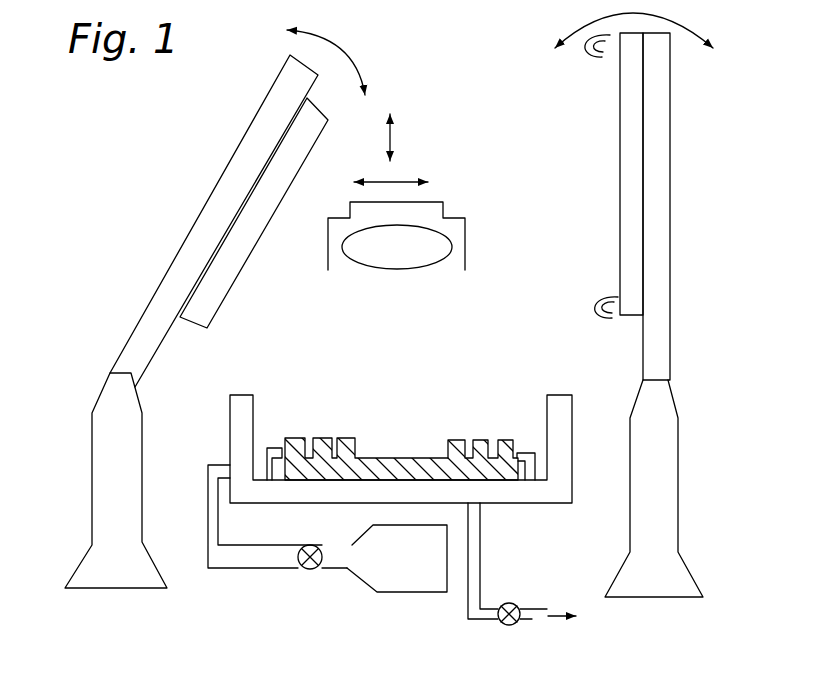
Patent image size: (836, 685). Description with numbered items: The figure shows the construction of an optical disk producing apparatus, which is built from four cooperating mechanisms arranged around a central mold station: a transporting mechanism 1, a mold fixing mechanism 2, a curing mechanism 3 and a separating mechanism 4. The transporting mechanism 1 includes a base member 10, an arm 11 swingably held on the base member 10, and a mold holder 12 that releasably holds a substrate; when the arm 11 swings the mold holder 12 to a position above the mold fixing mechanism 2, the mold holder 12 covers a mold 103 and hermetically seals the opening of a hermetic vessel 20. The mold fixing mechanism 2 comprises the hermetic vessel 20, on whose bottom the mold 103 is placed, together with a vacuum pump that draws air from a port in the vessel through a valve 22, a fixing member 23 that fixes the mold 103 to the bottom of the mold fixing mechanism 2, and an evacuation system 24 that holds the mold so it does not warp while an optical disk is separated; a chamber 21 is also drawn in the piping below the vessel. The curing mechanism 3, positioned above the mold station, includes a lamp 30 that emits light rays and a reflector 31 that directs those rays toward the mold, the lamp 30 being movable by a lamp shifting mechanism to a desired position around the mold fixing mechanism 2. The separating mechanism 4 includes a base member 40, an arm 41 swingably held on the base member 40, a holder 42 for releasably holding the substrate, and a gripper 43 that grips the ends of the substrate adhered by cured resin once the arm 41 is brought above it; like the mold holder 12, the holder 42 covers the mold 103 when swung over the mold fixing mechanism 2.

The transporting mechanism 1 is at (168, 321).
The base member 10 is at (144, 440).
The arm 11 is at (138, 318).
The mold holder 12 is at (192, 323).
The mold fixing mechanism 2 is at (412, 508).
The hermetic vessel 20 is at (567, 506).
The liquid chamber 21 is at (401, 594).
The valve 22 is at (313, 570).
The fixing member 23 is at (272, 448).
The evacuation system 24 is at (532, 622).
The mold 103 is at (508, 440).
The curing mechanism 3 is at (433, 227).
The lamp 30 is at (427, 266).
The reflector 31 is at (468, 233).
The separating mechanism 4 is at (645, 315).
The base member 40 is at (678, 420).
The arm 41 is at (670, 280).
The holder 42 is at (620, 137).
The gripper 43 is at (590, 57).